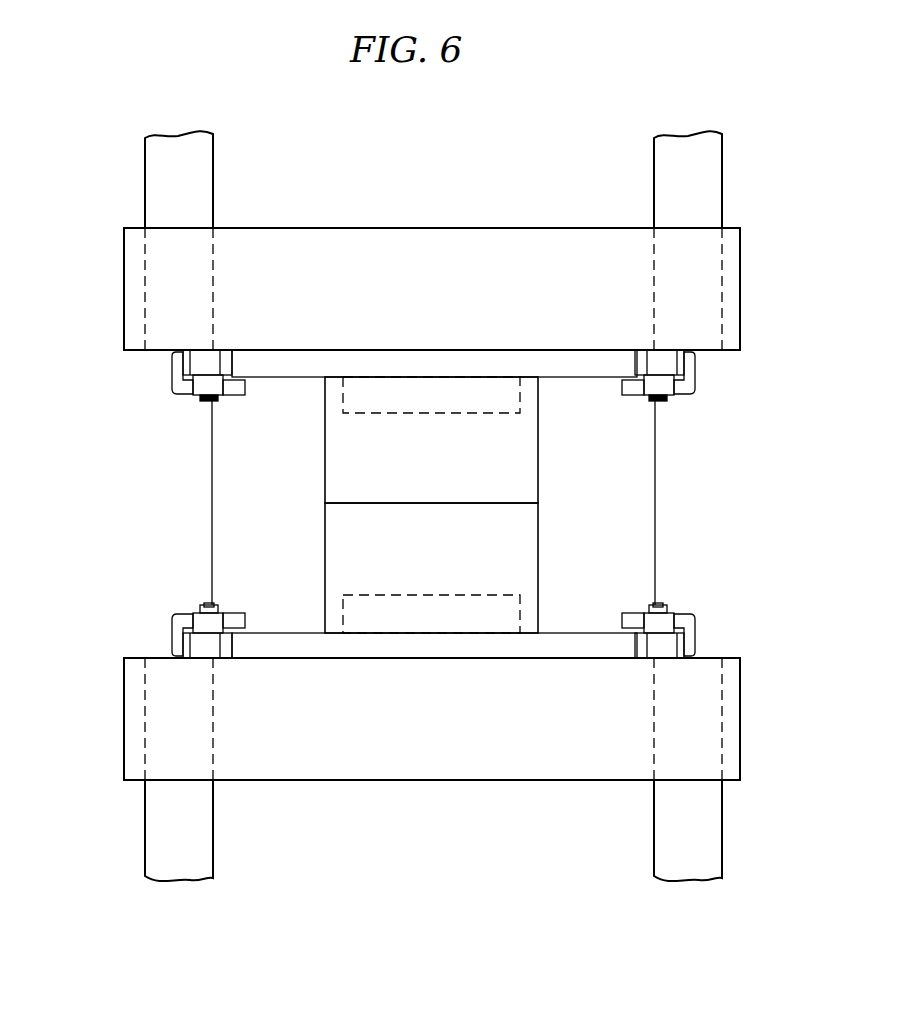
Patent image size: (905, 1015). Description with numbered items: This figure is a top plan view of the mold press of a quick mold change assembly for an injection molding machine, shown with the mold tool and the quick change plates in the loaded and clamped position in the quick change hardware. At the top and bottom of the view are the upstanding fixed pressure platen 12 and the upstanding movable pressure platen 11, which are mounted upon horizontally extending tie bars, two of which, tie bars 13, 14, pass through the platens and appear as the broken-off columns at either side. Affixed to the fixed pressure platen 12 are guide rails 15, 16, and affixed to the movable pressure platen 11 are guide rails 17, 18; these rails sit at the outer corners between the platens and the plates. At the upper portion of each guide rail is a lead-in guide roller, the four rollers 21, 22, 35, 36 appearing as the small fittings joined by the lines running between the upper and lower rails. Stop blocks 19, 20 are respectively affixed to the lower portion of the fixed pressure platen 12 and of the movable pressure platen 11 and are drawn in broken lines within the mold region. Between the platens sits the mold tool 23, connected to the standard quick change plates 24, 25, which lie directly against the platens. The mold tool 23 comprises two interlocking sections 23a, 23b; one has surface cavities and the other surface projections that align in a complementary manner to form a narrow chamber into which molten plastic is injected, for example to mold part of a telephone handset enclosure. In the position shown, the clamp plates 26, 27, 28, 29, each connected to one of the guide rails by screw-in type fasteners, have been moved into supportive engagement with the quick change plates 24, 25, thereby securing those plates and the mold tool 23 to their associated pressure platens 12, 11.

The upstanding movable pressure platen 11 is at (124, 748).
The upstanding fixed pressure platen 12 is at (124, 320).
The tie bar 13 is at (145, 835).
The tie bar 14 is at (722, 828).
The guide rail 15 is at (226, 375).
The guide rail 16 is at (664, 375).
The guide rail 17 is at (227, 631).
The guide rail 18 is at (665, 634).
The stop block 19 is at (488, 404).
The stop block 20 is at (498, 612).
The lead-in guide roller 21 is at (218, 398).
The lead-in guide roller 22 is at (647, 395).
The mold tool 23 is at (433, 505).
The interlocking section 23a is at (325, 452).
The interlocking section 23b is at (325, 557).
The quick change plate 24 is at (562, 380).
The quick change plate 25 is at (572, 630).
The clamping plate 26 is at (227, 395).
The clamping plate 27 is at (687, 395).
The clamping plate 28 is at (242, 613).
The clamping plate 29 is at (693, 615).
The lead-in guide roller 35 is at (220, 620).
The lead-in guide roller 36 is at (647, 618).